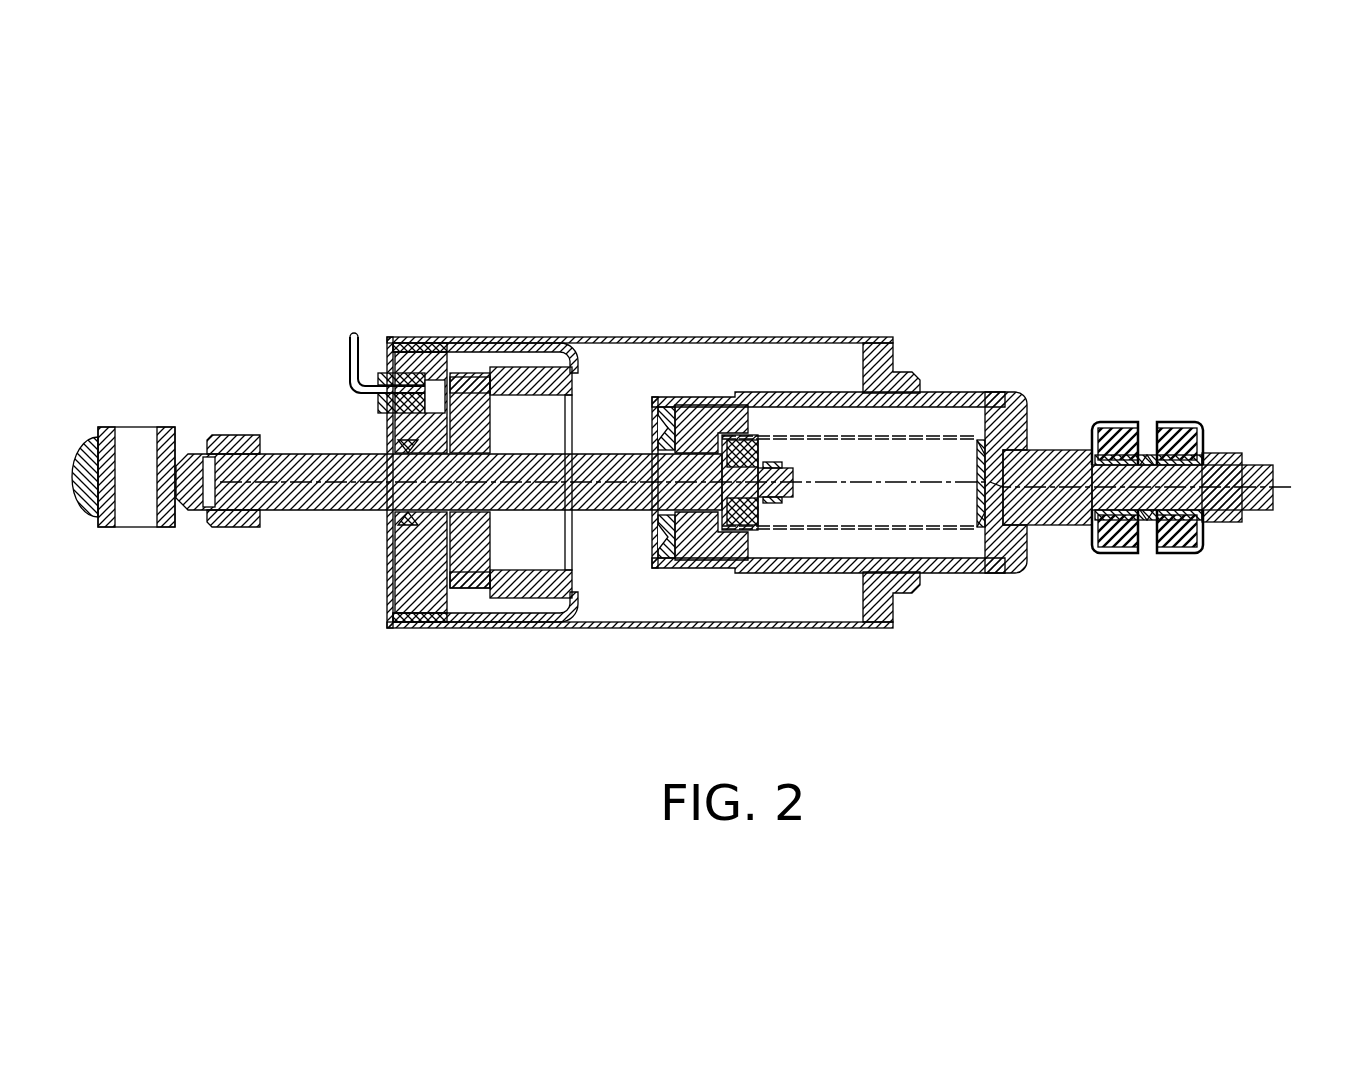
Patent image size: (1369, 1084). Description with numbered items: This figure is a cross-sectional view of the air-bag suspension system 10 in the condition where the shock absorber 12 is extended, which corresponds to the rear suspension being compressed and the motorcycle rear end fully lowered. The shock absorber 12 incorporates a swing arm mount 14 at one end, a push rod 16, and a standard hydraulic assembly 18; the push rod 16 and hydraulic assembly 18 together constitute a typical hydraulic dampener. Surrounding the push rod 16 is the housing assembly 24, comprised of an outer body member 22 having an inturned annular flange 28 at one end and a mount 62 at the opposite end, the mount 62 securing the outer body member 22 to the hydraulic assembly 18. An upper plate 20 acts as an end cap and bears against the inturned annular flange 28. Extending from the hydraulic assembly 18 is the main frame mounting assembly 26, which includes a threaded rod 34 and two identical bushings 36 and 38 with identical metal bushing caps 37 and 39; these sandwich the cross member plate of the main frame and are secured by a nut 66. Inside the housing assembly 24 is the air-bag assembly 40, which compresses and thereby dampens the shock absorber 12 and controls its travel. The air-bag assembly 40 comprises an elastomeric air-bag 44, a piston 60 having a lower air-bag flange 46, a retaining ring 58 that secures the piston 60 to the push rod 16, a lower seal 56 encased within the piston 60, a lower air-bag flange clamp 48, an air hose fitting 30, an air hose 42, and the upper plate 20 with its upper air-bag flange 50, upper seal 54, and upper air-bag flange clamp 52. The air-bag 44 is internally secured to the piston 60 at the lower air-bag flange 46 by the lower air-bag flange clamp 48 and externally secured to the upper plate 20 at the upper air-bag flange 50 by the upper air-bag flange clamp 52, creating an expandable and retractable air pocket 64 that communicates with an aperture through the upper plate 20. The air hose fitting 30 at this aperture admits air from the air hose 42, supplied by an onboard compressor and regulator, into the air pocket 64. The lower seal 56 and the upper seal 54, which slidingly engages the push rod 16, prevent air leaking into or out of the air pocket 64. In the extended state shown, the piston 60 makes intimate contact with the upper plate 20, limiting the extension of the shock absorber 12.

The air-bag suspension system 10 is at (778, 268).
The shock absorber 12 is at (228, 425).
The swing arm mount 14 is at (152, 527).
The push rod 16 is at (290, 452).
The hydraulic assembly 18 is at (937, 572).
The upper plate 20 is at (400, 560).
The outer body member 22 is at (840, 338).
The housing assembly 24 is at (775, 337).
The main frame mounting assembly 26 is at (1153, 423).
The inturned annular flange 28 is at (387, 625).
The air hose fitting 30 is at (377, 373).
The threaded rod 34 is at (1268, 465).
The bushing 36 is at (1132, 550).
The metal bushing cap 37 is at (1115, 553).
The bushing 38 is at (1157, 550).
The metal bushing cap 39 is at (1187, 553).
The air-bag assembly 40 is at (487, 533).
The air hose 42 is at (352, 340).
The air-bag 44 is at (597, 630).
The lower air-bag flange 46 is at (573, 430).
The lower air-bag flange clamp 48 is at (505, 615).
The upper air-bag flange 50 is at (433, 627).
The upper air-bag flange clamp 52 is at (420, 622).
The upper seal 54 is at (400, 530).
The lower seal 56 is at (462, 383).
The retaining ring 58 is at (487, 450).
The piston 60 is at (565, 580).
The mount 62 is at (907, 377).
The air pocket 64 is at (492, 357).
The nut 66 is at (1218, 455).